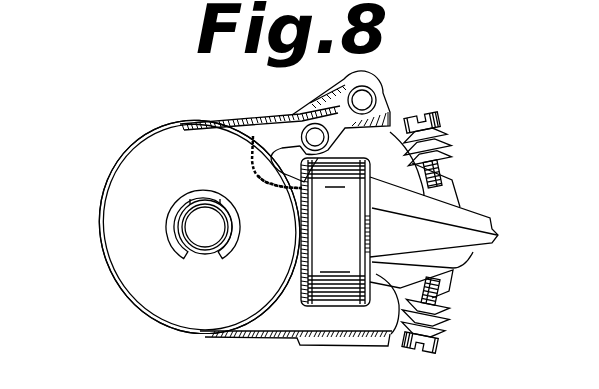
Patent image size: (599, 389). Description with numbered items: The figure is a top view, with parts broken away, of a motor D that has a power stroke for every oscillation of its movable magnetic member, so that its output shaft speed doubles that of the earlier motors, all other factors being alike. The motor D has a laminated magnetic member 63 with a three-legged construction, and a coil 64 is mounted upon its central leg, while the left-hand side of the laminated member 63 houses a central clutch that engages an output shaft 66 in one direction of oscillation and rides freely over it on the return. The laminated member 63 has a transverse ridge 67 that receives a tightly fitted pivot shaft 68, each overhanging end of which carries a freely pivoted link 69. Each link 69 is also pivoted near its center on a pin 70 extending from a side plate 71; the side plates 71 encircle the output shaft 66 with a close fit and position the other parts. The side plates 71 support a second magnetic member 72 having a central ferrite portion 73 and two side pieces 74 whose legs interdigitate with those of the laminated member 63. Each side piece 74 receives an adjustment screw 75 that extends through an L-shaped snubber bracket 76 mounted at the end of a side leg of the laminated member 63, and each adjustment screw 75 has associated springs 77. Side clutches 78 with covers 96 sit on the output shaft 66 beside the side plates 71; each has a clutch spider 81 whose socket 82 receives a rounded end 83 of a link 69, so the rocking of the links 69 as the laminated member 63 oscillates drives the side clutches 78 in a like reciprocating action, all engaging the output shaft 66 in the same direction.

The motor D is at (129, 130).
The laminated magnetic member 63 is at (336, 352).
The coil 64 is at (345, 206).
The output shaft 66 is at (207, 243).
The transverse ridge 67 is at (389, 103).
The pivot shaft 68 is at (370, 90).
The link 69 is at (337, 113).
The pin 70 is at (312, 132).
The side plate 71 is at (267, 135).
The second magnetic member 72 is at (488, 214).
The central ferrite portion 73 is at (470, 252).
The side piece 74 is at (462, 208).
The adjustment screw 75 is at (452, 168).
The L-shaped snubber bracket 76 is at (445, 152).
The springs 77 is at (438, 140).
The side clutch 78 is at (96, 249).
The clutch spider 81 is at (252, 149).
The socket 82 is at (273, 163).
The rounded end 83 is at (283, 184).
The cover 96 is at (133, 185).